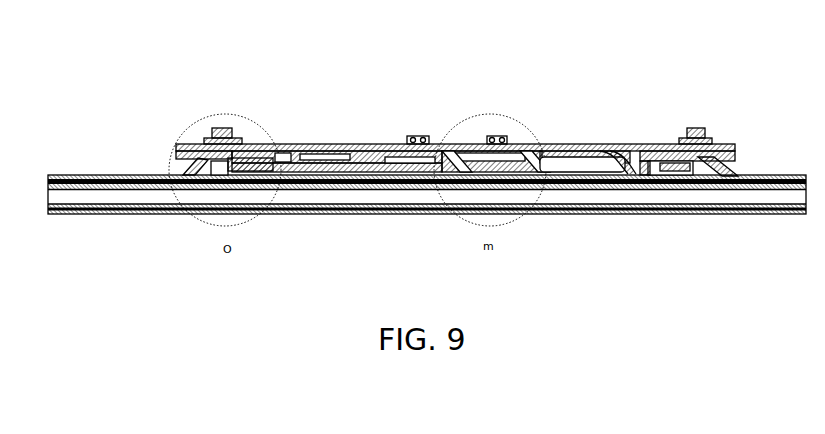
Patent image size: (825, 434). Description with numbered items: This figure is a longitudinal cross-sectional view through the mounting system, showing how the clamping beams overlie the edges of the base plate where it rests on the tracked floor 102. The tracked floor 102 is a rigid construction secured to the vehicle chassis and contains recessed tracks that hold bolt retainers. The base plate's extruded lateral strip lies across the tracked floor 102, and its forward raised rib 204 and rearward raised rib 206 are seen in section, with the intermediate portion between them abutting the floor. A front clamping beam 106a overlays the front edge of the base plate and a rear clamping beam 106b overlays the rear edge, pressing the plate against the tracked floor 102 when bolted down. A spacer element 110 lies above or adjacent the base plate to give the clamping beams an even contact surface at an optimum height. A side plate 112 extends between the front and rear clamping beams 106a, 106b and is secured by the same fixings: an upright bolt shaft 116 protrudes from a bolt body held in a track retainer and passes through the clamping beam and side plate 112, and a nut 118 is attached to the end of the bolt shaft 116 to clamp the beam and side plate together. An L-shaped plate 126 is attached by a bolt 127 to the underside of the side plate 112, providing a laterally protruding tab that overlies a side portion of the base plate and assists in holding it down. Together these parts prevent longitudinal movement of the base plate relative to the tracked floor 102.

The tracked floor 102 is at (425, 198).
The front clamping beam 106a is at (673, 162).
The rear clamping beam 106b is at (250, 160).
The spacer element 110 is at (670, 165).
The side plate 112 is at (367, 145).
The bolt shaft 116 is at (700, 168).
The nut 118 is at (703, 143).
The L-shaped plate 126 is at (483, 158).
The bolt 127 is at (418, 137).
The forward raised rib 204 is at (592, 143).
The rearward raised rib 206 is at (315, 155).